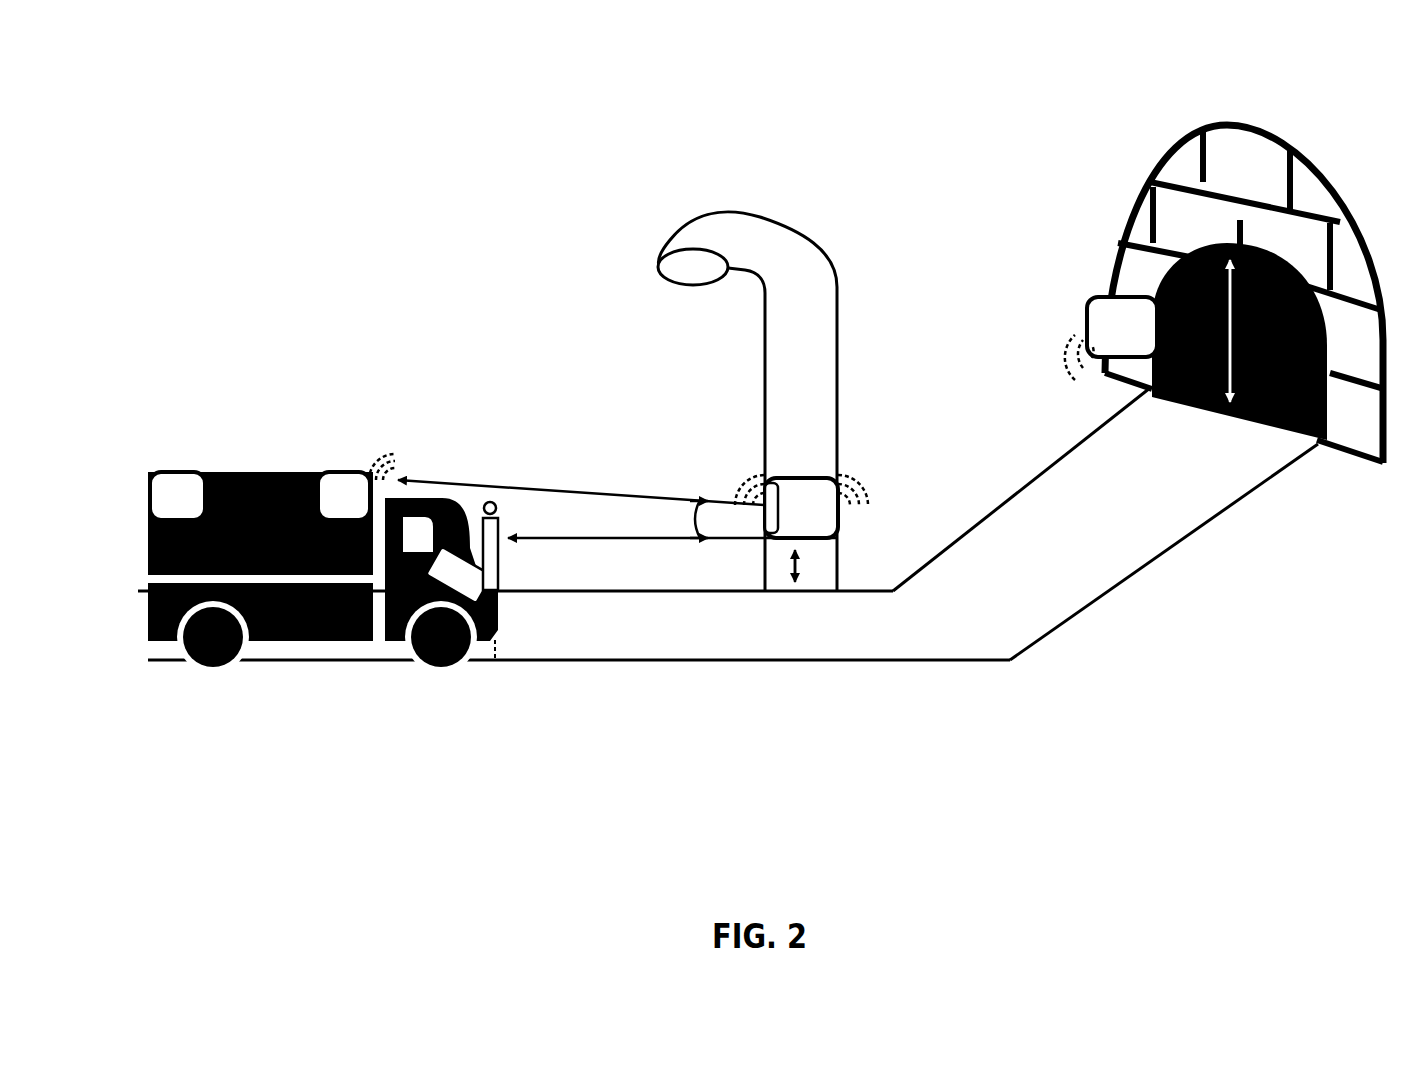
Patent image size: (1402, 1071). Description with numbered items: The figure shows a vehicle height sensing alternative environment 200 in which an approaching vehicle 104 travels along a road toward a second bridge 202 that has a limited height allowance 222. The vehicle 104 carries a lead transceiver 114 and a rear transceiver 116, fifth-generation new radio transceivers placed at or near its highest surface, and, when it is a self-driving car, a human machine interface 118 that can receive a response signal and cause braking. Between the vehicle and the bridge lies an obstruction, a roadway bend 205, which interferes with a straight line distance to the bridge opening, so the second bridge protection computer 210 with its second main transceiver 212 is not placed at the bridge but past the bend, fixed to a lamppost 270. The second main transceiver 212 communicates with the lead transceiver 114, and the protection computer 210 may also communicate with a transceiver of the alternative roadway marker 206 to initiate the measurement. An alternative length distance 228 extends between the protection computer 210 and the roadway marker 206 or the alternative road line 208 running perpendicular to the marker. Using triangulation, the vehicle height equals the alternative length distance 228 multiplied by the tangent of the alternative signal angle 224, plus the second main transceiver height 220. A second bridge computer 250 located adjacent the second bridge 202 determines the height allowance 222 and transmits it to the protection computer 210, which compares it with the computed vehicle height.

The vehicle height sensing alternative environment 200 is at (330, 112).
The approaching vehicle 104 is at (315, 623).
The lead transceiver 114 is at (356, 487).
The rear transceiver 116 is at (177, 496).
The human machine interface 118 is at (459, 575).
The roadway bend 205 is at (1017, 672).
The alternative roadway marker 206 is at (523, 518).
The alternative road line 208 is at (497, 641).
The second bridge protection computer 210 is at (801, 506).
The second main transceiver 212 is at (772, 487).
The second main transceiver height 220 is at (800, 572).
The second bridge height allowance 222 is at (1227, 338).
The alternative signal angle 224 is at (694, 519).
The alternative length distance 228 is at (757, 541).
The second bridge computer 250 is at (1111, 338).
The lamppost 270 is at (797, 250).
The second bridge 202 is at (1360, 438).